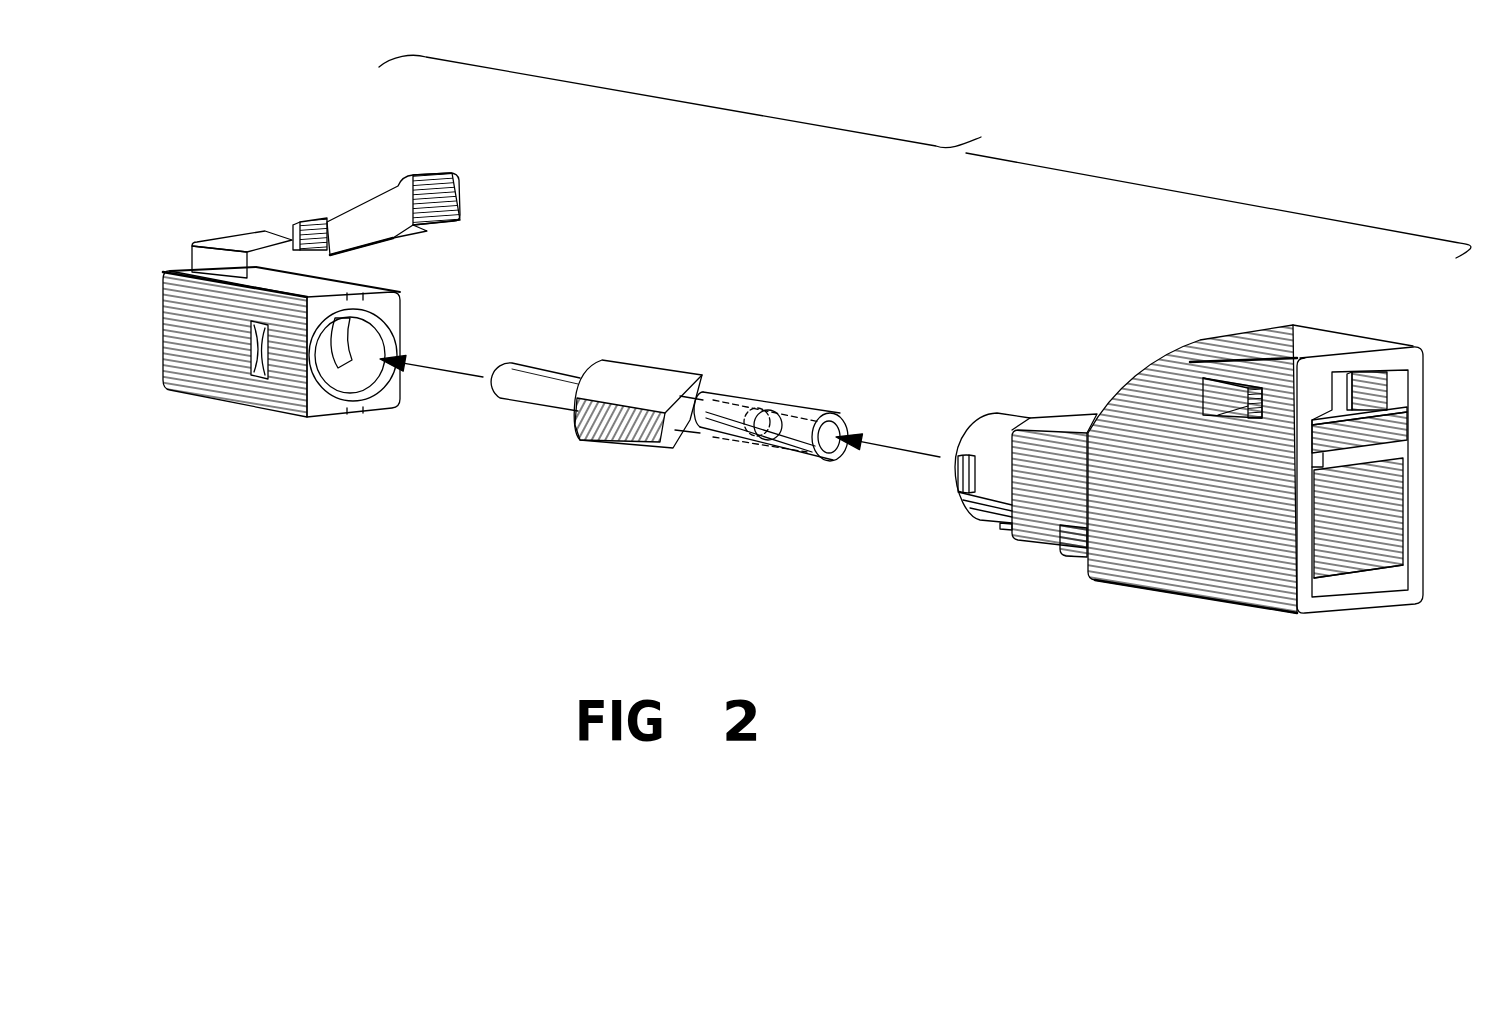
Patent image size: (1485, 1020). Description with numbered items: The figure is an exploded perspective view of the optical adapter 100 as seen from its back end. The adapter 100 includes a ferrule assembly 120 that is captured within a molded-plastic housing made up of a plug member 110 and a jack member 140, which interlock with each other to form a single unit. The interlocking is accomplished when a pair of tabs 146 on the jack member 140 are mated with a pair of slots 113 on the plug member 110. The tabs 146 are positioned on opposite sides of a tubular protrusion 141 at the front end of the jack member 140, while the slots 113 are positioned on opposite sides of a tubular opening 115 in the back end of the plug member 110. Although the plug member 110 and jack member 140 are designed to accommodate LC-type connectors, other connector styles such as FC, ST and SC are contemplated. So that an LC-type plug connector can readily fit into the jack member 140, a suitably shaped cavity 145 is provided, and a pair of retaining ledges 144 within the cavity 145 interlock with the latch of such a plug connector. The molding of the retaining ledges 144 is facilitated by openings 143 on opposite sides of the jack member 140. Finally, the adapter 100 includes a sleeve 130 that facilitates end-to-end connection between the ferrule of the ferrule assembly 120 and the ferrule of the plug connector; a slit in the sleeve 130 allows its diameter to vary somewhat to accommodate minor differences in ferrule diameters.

The optical adapter 100 is at (925, 156).
The plug member 110 is at (225, 229).
The slots 113 is at (297, 407).
The tubular opening 115 is at (368, 392).
The ferrule assembly 120 is at (658, 358).
The sleeve 130 is at (806, 397).
The jack member 140 is at (1156, 353).
The tubular protrusion 141 is at (996, 414).
The openings 143 is at (1259, 396).
The retaining ledges 144 is at (1373, 389).
The cavity 145 is at (1363, 580).
The tabs 146 is at (956, 488).